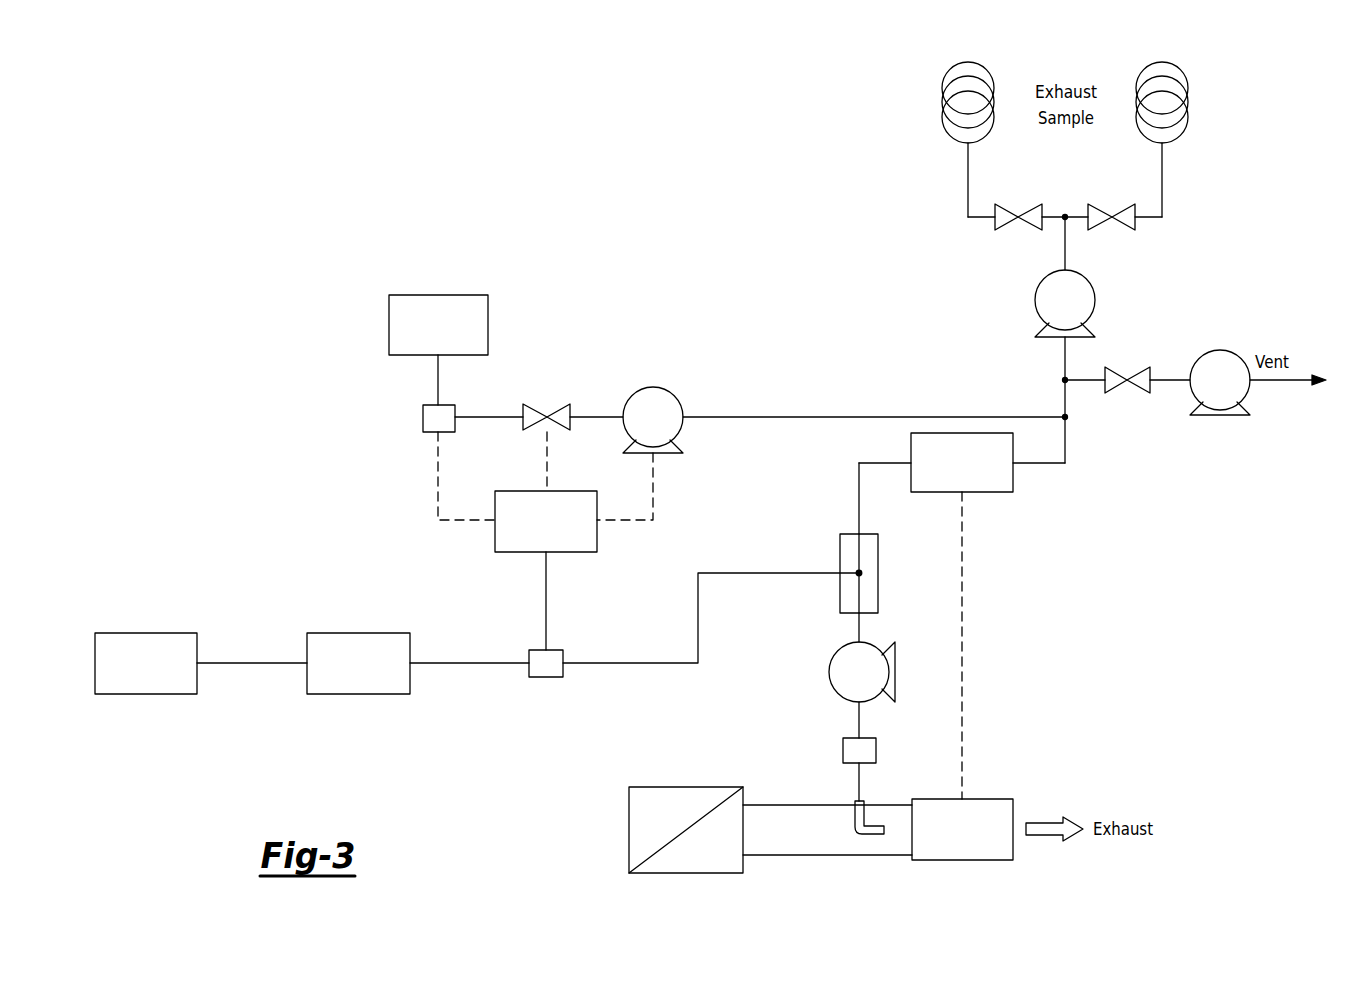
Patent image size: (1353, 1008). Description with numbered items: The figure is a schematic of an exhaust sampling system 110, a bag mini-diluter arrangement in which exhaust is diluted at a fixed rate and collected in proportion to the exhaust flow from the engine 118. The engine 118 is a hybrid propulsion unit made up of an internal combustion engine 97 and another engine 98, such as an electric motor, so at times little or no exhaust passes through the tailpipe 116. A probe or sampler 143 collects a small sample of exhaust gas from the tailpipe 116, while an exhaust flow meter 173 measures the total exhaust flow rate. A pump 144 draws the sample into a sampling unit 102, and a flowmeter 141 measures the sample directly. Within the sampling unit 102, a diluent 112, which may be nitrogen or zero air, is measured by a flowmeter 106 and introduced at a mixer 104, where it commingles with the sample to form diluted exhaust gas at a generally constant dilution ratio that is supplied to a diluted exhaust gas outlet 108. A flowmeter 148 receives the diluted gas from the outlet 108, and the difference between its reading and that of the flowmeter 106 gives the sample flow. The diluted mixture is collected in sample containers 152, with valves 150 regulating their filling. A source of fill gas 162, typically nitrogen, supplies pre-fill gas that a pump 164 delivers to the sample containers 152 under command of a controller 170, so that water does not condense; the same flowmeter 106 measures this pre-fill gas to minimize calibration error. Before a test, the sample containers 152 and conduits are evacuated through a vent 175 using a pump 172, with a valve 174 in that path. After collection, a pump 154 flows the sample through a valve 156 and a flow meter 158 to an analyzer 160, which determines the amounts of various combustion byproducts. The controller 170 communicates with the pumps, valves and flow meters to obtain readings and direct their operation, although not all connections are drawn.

The internal combustion engine 97 is at (733, 873).
The other engine 98 is at (697, 816).
The sampling unit 102 is at (833, 600).
The mixer 104 is at (859, 573).
The flowmeter 106 is at (547, 677).
The diluted exhaust gas outlet 108 is at (858, 533).
The exhaust sampling system 110 is at (780, 316).
The diluent 112 is at (358, 633).
The tailpipe 116 is at (852, 856).
The engine 118 is at (582, 834).
The flowmeter 141 is at (843, 753).
The probe or sampler 143 is at (855, 825).
The pump 144 is at (848, 646).
The flowmeter 148 is at (995, 493).
The valves 150 is at (1010, 204).
The sample containers 152 is at (942, 83).
The pump 154 is at (642, 392).
The valve 156 is at (538, 405).
The flow meter 158 is at (423, 421).
The analyzer 160 is at (389, 328).
The fill gas 162 is at (147, 633).
The pump 164 is at (1050, 275).
The controller 170 is at (515, 491).
The pump 172 is at (1201, 357).
The exhaust flow meter 173 is at (963, 861).
The valve 174 is at (1137, 367).
The vent 175 is at (1279, 386).